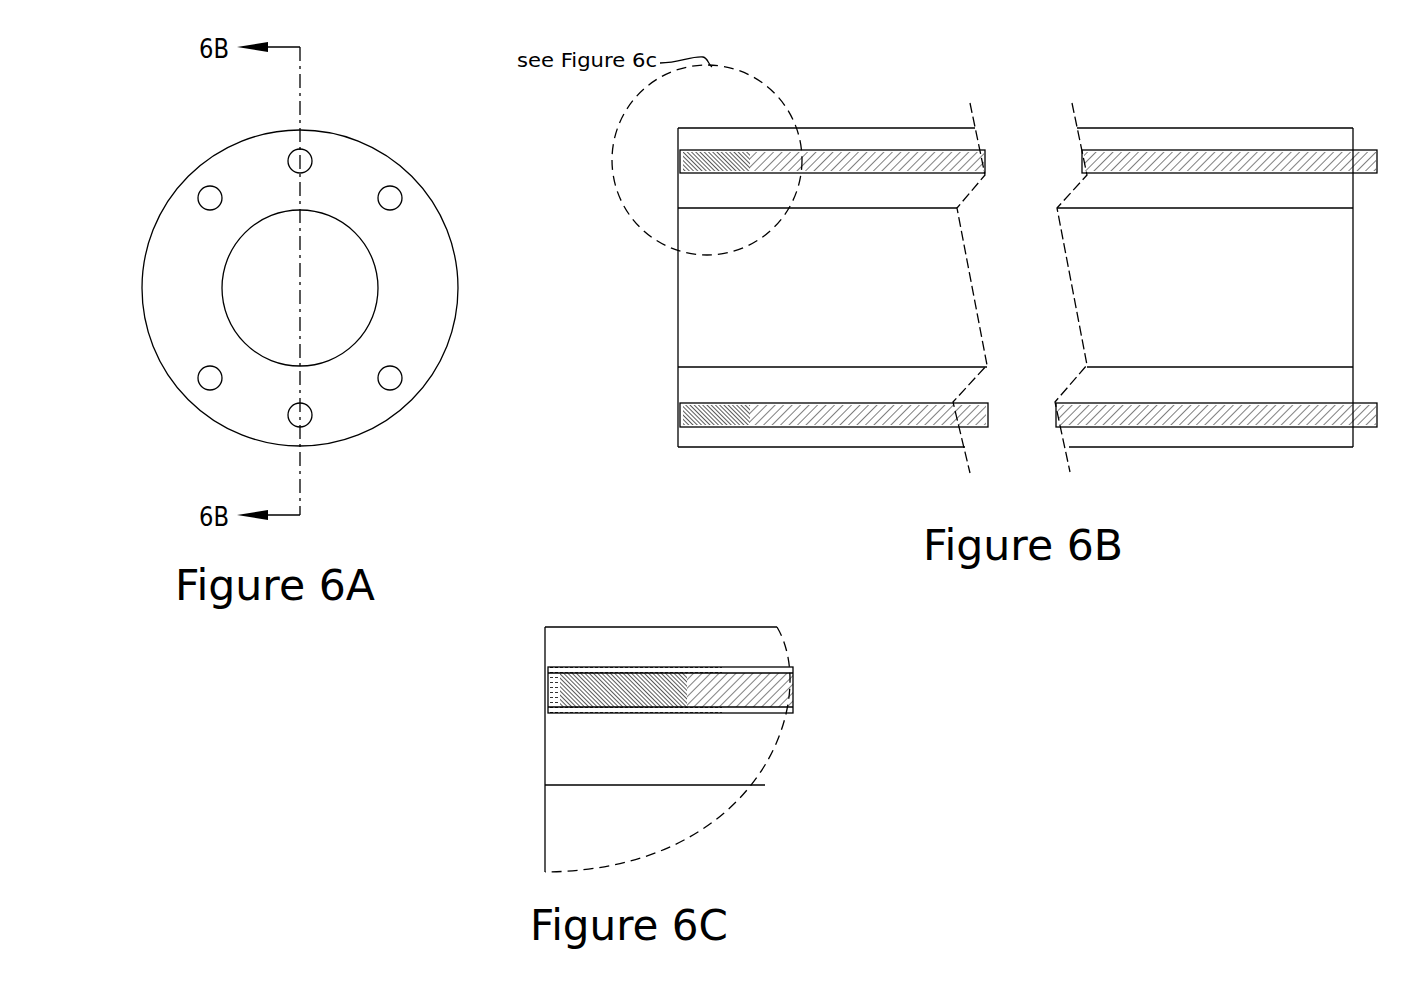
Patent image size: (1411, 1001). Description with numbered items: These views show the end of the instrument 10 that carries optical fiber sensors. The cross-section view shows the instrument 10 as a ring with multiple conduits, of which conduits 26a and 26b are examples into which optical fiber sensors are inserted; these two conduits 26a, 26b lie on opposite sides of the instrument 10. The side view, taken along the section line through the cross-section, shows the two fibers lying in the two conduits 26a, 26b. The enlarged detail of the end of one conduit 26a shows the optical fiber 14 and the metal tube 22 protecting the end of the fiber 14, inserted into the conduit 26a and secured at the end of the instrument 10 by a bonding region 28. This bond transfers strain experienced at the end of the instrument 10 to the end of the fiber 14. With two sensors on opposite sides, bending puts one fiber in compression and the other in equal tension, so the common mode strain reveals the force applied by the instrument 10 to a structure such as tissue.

In FIG. 6A, the instrument 10 is at (457, 291).
In FIG. 6A, the conduit 26a is at (311, 152).
In FIG. 6B, the conduit 26a is at (664, 152).
In FIG. 6C, the conduit 26a is at (478, 705).
In FIG. 6A, the conduit 26b is at (312, 417).
In FIG. 6B, the conduit 26b is at (664, 418).
In FIG. 6C, the metal tube 22 is at (629, 672).
In FIG. 6C, the bonding region 28 is at (547, 686).
In FIG. 6C, the optical fiber 14 is at (684, 642).